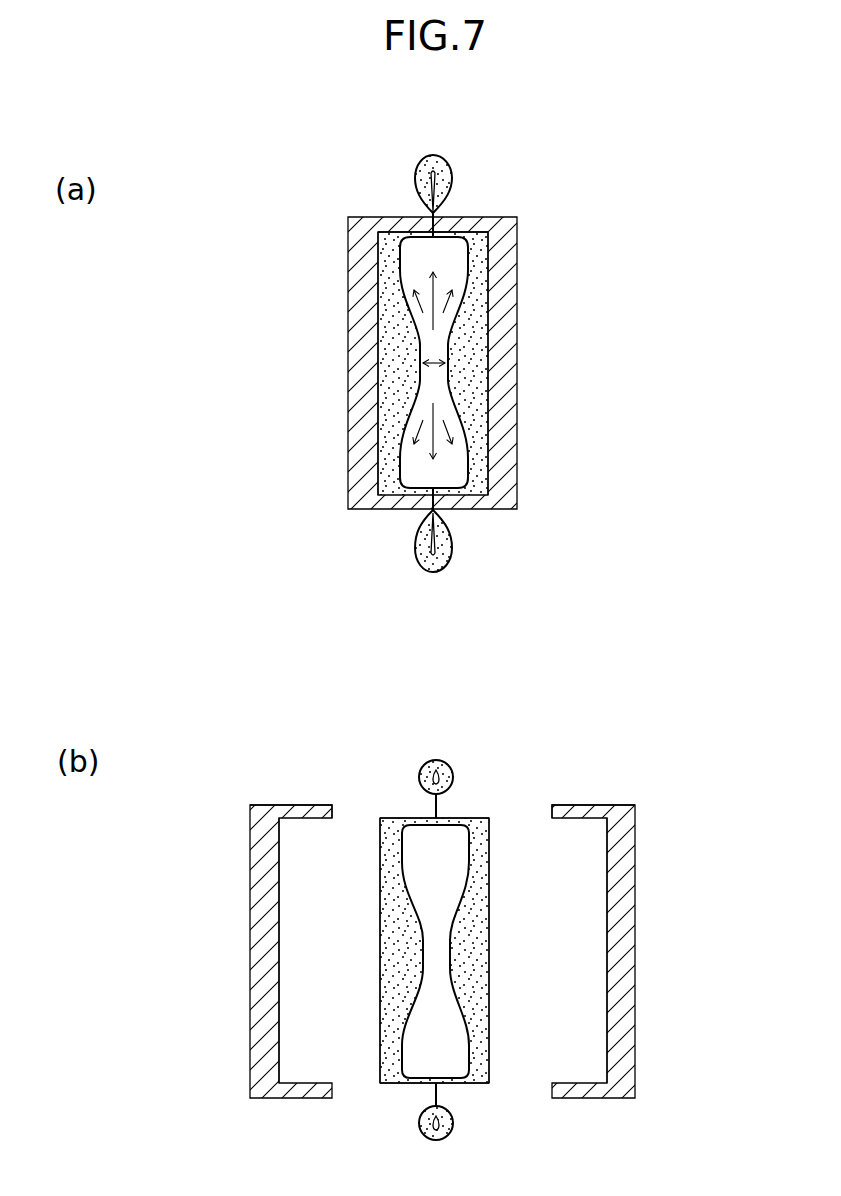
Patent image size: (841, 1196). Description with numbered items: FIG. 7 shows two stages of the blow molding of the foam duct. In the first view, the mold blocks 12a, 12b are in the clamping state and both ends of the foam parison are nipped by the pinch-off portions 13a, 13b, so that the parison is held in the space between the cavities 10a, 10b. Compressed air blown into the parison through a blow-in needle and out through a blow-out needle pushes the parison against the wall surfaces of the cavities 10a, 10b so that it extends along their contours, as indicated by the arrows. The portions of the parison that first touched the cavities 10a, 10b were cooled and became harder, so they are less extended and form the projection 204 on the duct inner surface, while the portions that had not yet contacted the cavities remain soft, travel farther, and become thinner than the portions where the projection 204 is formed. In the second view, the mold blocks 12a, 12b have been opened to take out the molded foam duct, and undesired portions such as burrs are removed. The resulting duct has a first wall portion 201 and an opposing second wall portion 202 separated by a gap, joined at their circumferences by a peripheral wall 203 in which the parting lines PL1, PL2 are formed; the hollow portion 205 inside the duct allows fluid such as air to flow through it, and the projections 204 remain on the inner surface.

The cavity 10a is at (380, 270).
The cavity 10b is at (486, 270).
The mold block 12a is at (348, 256).
The mold block 12b is at (517, 234).
The pinch-off portion 13a is at (402, 217).
The pinch-off portion 13b is at (472, 217).
The first wall portion 201 is at (489, 876).
The second wall portion 202 is at (380, 882).
The peripheral wall 203 is at (407, 818).
The projection 204 is at (395, 358).
The hollow portion 205 is at (446, 1062).
The parting line PL1 is at (447, 818).
The parting line PL2 is at (430, 1094).